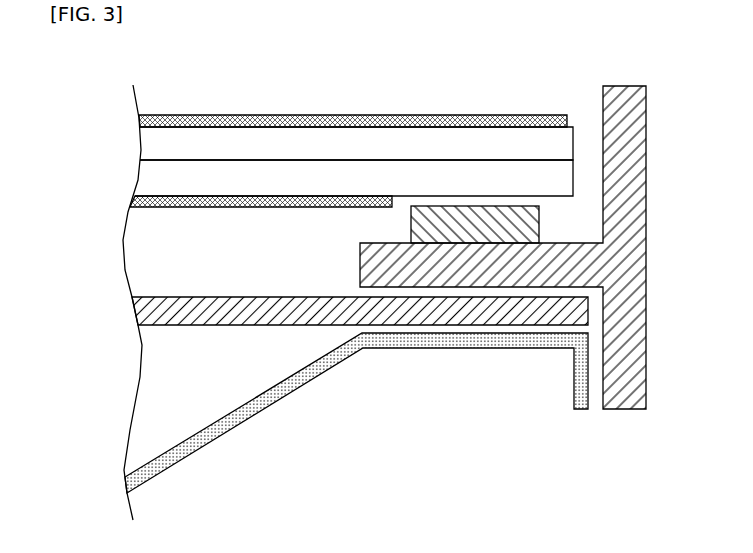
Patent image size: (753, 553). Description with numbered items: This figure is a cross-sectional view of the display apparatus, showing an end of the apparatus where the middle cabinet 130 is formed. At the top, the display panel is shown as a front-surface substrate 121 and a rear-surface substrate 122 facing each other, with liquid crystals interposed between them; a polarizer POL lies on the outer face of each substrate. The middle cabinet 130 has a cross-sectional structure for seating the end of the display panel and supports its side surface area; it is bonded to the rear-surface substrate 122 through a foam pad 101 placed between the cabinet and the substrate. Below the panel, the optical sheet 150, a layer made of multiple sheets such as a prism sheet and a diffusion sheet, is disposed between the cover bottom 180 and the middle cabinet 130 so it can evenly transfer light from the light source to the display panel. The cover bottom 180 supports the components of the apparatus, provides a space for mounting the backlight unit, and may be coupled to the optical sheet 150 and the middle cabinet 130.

The polarizer POL is at (140, 121).
The front-surface substrate 121 is at (141, 144).
The rear-surface substrate 122 is at (138, 172).
The foam pad 101 is at (473, 206).
The middle cabinet 130 is at (627, 413).
The optical sheet 150 is at (143, 311).
The cover bottom 180 is at (585, 413).